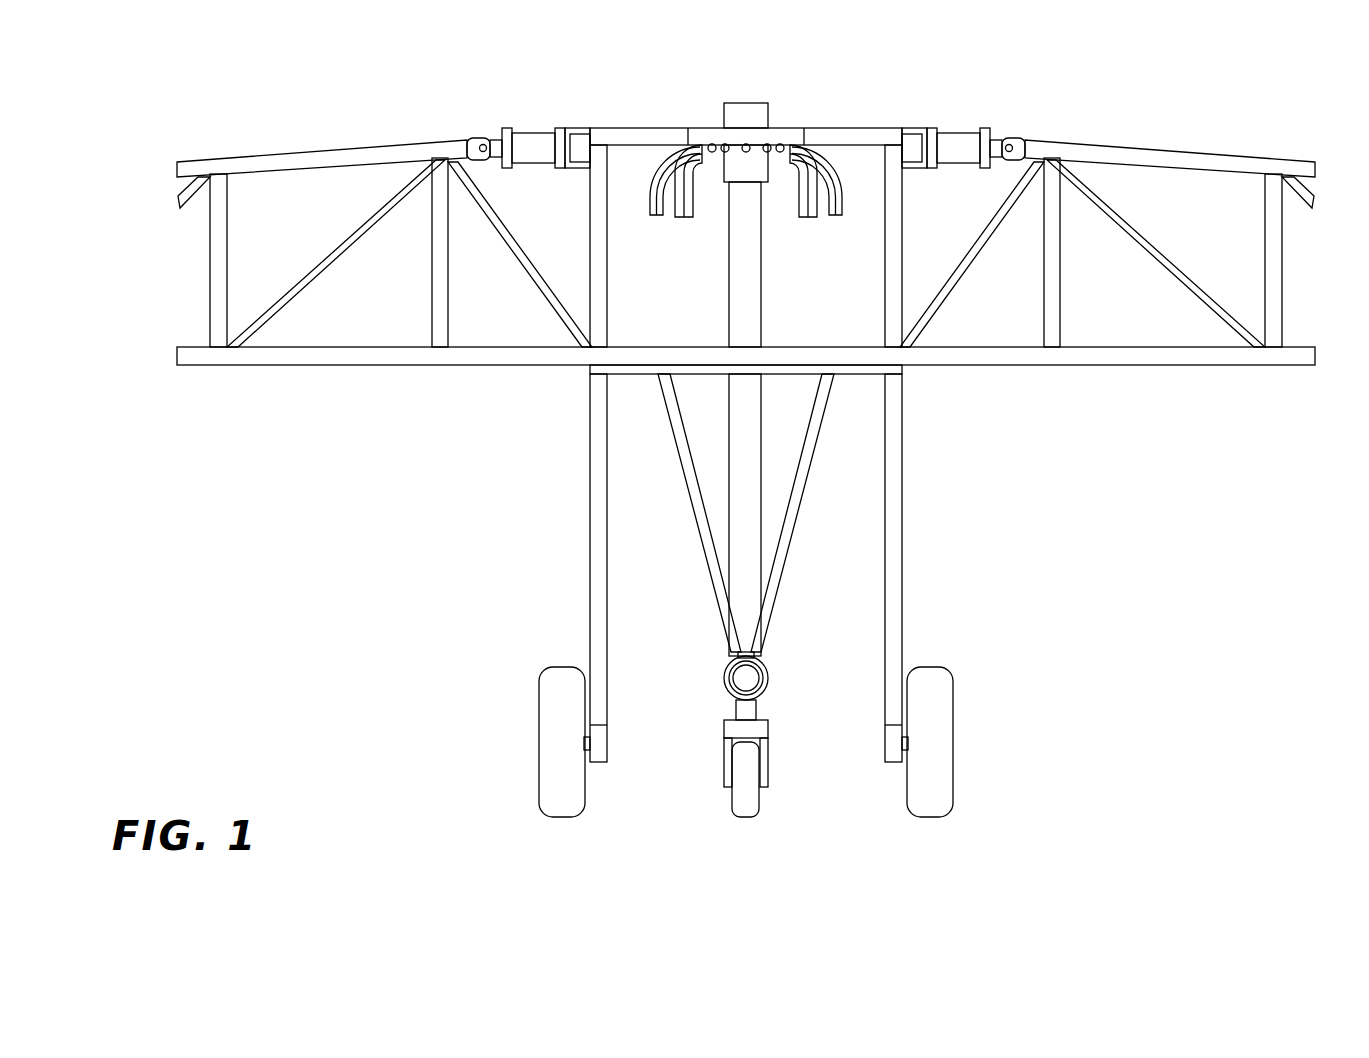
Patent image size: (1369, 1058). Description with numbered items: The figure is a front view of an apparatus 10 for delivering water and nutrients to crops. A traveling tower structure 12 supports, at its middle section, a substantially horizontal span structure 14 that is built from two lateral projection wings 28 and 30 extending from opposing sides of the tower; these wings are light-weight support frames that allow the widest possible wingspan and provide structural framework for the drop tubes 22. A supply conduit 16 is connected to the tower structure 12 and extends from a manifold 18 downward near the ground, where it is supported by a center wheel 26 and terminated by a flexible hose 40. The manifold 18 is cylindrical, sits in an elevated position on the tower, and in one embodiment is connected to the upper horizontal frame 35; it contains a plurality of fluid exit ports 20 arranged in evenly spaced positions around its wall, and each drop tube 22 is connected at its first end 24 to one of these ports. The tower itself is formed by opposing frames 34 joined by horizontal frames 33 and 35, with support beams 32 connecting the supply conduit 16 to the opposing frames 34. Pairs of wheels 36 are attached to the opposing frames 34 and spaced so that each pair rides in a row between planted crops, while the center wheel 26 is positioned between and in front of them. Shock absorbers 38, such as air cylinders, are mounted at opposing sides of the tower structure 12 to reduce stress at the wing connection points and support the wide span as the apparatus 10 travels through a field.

The apparatus 10 is at (1092, 539).
The traveling tower structure 12 is at (965, 838).
The substantially horizontal span structure 14 is at (145, 78).
The supply conduit 16 is at (757, 304).
The manifold 18 is at (786, 125).
The fluid exit ports 20 is at (747, 144).
The drop tubes 22 is at (684, 218).
The first end 24 is at (703, 158).
The center wheel 26 is at (752, 806).
The lateral projection wing 28 is at (905, 395).
The lateral projection wing 30 is at (587, 395).
The support beams 32 is at (700, 518).
The horizontal frame 33 is at (697, 370).
The opposing frames 34 is at (592, 220).
The horizontal frame 35 is at (610, 137).
The pairs of wheels 36 is at (522, 668).
The shock absorbers 38 is at (468, 120).
The flexible hose 40 is at (770, 676).